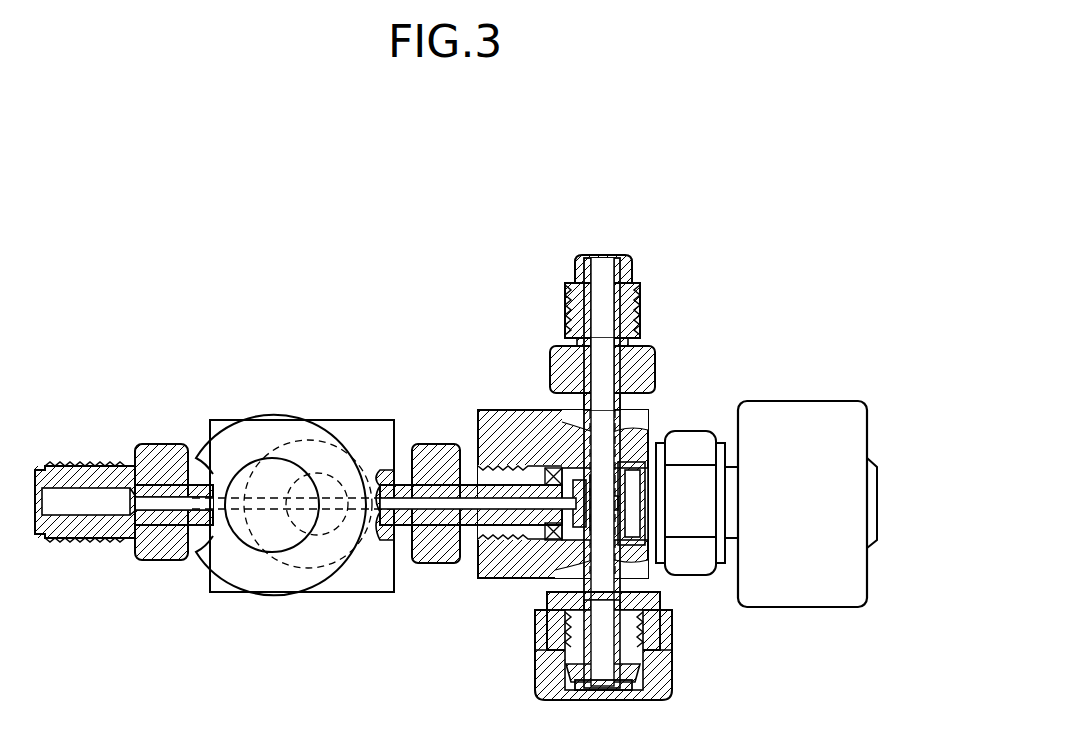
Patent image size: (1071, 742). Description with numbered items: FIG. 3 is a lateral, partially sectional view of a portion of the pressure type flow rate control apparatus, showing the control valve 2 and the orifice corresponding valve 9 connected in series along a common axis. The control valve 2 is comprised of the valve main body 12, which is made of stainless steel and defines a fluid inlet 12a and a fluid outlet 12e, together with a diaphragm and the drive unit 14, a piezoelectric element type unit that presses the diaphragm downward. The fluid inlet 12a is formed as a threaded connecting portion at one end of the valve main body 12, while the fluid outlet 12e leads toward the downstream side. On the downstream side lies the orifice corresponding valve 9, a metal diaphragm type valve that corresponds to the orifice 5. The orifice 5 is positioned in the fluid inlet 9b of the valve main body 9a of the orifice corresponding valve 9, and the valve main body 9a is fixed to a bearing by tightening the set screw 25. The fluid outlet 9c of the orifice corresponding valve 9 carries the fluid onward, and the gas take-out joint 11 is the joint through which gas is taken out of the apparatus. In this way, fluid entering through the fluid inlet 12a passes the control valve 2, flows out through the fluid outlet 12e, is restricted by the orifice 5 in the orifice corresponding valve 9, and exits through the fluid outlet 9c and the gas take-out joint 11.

The control valve 2 is at (247, 385).
The valve main body 12 is at (333, 420).
The fluid inlet 12a is at (68, 515).
The fluid outlet 12e is at (440, 498).
The drive unit 14 is at (293, 592).
The set screw 25 is at (437, 560).
The orifice corresponding valve 9 is at (717, 404).
The valve main body 9a is at (545, 468).
The fluid inlet 9b is at (562, 478).
The fluid outlet 9c is at (640, 365).
The gas take-out joint 11 is at (640, 300).
The orifice 5 is at (555, 545).